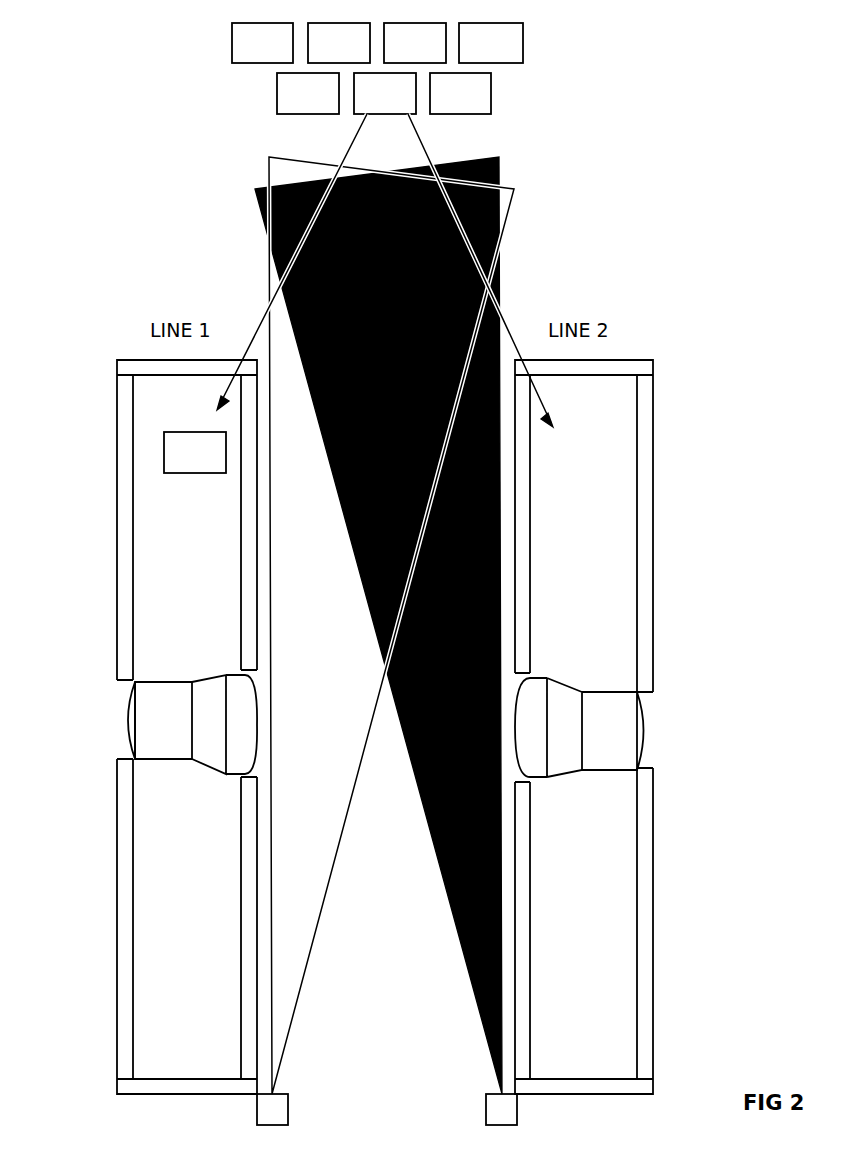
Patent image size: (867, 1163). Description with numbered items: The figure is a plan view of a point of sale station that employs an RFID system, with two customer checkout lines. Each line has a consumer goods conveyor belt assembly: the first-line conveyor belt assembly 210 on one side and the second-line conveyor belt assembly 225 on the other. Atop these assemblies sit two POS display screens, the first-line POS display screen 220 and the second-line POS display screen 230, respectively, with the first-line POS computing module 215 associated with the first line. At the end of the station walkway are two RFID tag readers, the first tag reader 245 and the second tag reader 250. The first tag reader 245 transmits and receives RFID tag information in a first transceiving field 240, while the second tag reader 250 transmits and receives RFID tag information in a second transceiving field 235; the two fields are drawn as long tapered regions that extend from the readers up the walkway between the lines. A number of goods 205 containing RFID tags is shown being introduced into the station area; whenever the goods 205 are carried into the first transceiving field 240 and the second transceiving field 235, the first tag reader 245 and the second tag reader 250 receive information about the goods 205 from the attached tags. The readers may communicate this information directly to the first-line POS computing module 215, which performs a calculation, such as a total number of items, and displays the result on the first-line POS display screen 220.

The goods 205 is at (232, 54).
The line 1 conveyor belt assembly 210 is at (157, 517).
The line 1 POS computing module 215 is at (127, 695).
The line 1 POS display screen 220 is at (257, 695).
The line 2 conveyor belt assembly 225 is at (614, 517).
The line 2 POS display screen 230 is at (653, 710).
The second transceiving field 235 is at (450, 785).
The first transceiving field 240 is at (310, 830).
The first tag reader 245 is at (285, 1112).
The second tag reader 250 is at (493, 1117).